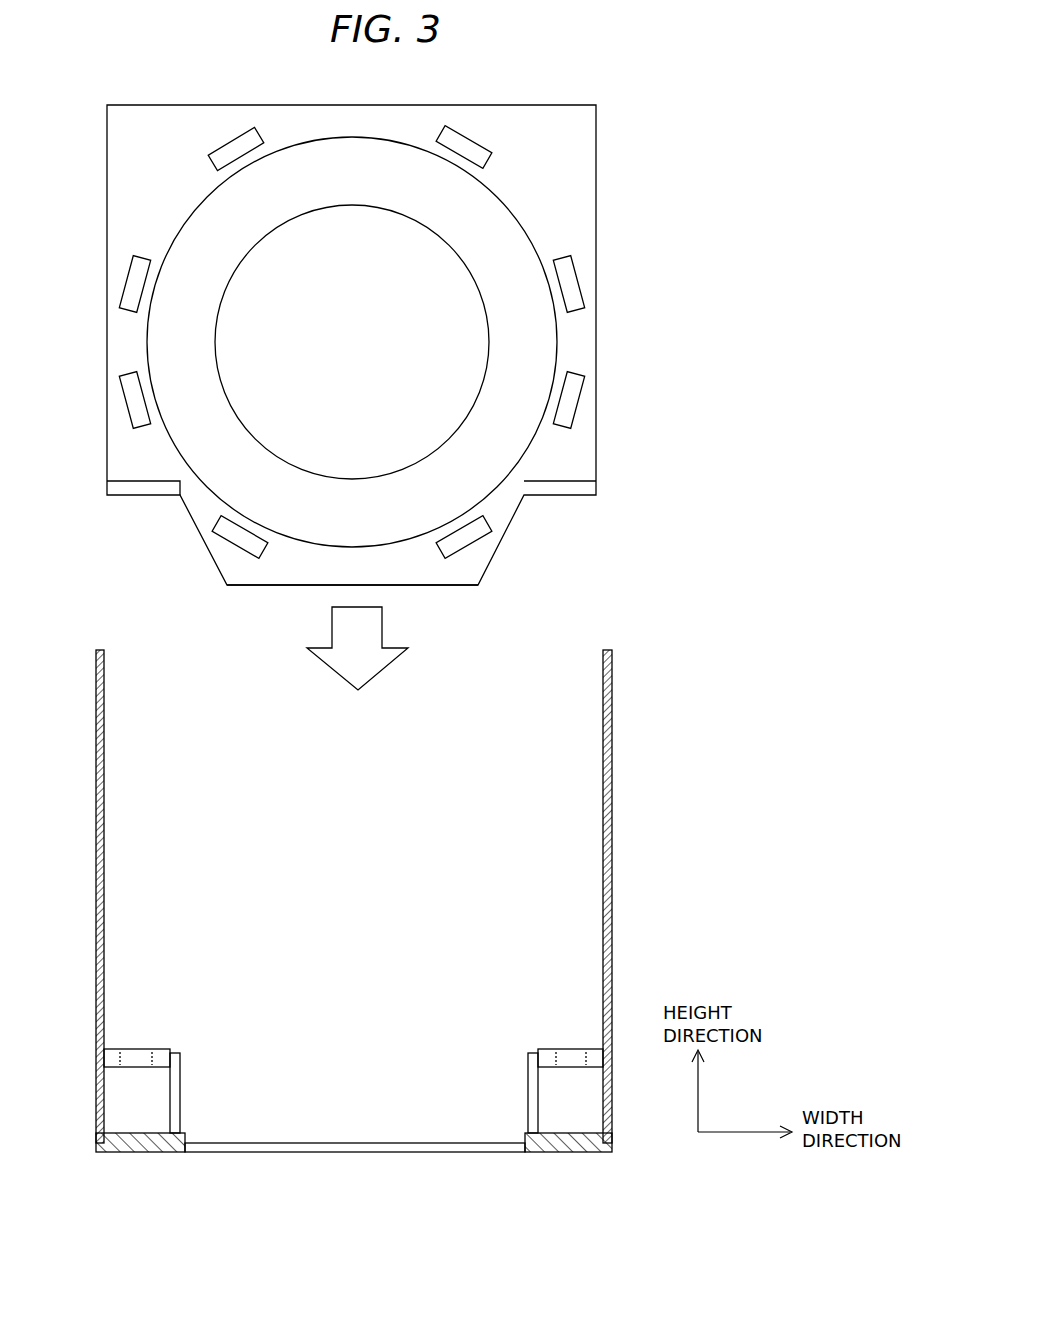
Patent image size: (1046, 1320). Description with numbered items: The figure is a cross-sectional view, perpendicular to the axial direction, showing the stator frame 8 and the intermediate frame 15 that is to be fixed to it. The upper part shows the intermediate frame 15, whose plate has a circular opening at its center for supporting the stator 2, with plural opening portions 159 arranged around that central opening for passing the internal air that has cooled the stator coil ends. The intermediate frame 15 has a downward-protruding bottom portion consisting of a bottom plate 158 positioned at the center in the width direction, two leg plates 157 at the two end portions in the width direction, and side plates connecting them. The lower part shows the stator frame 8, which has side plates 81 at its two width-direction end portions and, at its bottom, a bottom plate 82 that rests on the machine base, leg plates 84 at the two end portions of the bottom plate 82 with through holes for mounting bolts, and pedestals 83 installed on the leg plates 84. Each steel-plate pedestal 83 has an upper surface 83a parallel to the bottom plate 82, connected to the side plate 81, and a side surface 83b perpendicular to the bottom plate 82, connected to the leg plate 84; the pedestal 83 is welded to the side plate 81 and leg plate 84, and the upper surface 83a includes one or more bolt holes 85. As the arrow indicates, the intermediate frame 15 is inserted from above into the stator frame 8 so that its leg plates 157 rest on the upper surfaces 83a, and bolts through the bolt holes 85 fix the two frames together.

The stator 2 is at (523, 358).
The intermediate frame 15 is at (606, 163).
The leg plates 157 is at (586, 488).
The bottom plate 158 is at (446, 587).
The opening portions 159 is at (568, 286).
The stator frame 8 is at (406, 942).
The side plates 81 is at (614, 858).
The bottom plate 82 is at (372, 1143).
The pedestals 83 is at (353, 1040).
The upper surface 83a is at (165, 1048).
The side surface 83b is at (183, 1100).
The leg plates 84 is at (135, 1152).
The bolt holes 85 is at (143, 1050).